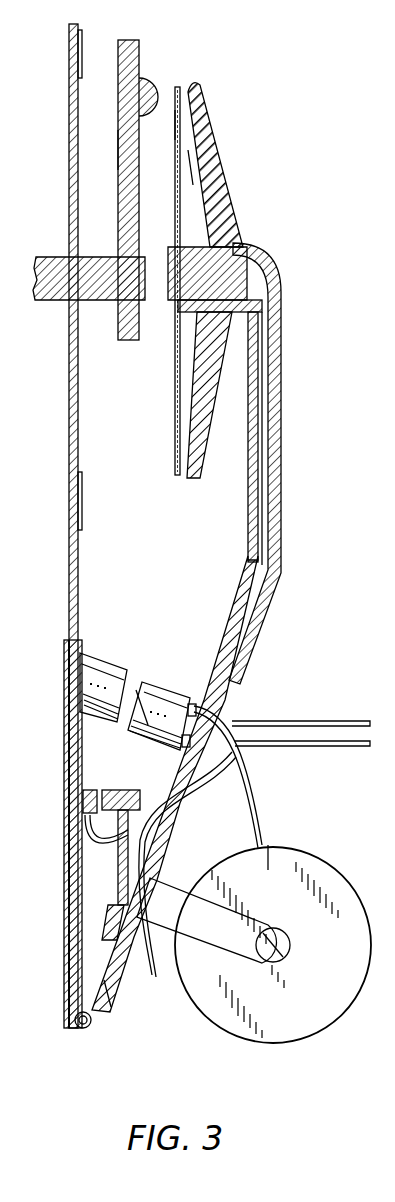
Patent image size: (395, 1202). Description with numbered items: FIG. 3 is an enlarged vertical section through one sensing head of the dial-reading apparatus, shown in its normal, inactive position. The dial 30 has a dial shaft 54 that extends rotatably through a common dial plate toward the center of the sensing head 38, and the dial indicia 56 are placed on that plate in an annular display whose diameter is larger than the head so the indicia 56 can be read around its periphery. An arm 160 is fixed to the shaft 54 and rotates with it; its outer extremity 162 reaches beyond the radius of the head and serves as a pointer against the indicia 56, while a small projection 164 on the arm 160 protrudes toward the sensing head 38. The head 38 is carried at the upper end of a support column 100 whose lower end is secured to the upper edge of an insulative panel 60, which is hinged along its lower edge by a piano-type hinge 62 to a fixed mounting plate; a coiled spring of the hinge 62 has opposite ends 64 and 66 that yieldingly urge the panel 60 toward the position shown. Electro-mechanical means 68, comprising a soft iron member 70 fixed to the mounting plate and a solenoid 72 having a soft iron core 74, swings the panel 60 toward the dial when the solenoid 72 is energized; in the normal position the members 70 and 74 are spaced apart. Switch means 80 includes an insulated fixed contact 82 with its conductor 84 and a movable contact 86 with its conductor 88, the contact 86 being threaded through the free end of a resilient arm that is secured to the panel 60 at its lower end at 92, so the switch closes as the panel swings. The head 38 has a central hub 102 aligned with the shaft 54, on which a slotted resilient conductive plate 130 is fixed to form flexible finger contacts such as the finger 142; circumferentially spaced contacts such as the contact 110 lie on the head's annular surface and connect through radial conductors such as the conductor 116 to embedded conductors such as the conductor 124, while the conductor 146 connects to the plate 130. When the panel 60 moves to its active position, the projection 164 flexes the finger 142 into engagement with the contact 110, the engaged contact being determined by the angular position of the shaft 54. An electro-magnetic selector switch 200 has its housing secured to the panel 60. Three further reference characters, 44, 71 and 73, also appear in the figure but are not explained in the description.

The dial 30 is at (69, 122).
The dial indicia 56 is at (85, 45).
The dial shaft 54 is at (46, 266).
The outer extremity 162 is at (126, 42).
The projection 164 is at (152, 95).
The arm 160 is at (118, 155).
The electrical contact 110 is at (177, 87).
The contact finger 142 is at (175, 120).
The sensing head 38 is at (205, 125).
The electrical conductor 116 is at (198, 177).
The electric conductor 124 is at (243, 240).
The hub 102 is at (168, 275).
The electrical conductor 146 is at (182, 308).
The plate 130 is at (195, 360).
The support column 100 is at (276, 452).
The panel 60 is at (160, 841).
The spring end 66 is at (113, 1006).
The lower end attachment 92 is at (117, 935).
The spring end 64 is at (68, 1003).
The piano-type hinge 62 is at (84, 1028).
The soft iron member 70 is at (130, 682).
The solenoid 72 is at (166, 712).
The soft iron core 74 is at (136, 690).
The electro-mechanical means 68 is at (190, 657).
The assembly 44 is at (263, 680).
The tube 71 is at (303, 720).
The tube 73 is at (312, 746).
The insulated contact 82 is at (97, 786).
The movable contact 86 is at (118, 790).
The switch means 80 is at (122, 795).
The insulated electric conductor 84 is at (65, 855).
The electro-magnetic selector switch 200 is at (310, 1052).
The insulated conductor 88 is at (178, 975).